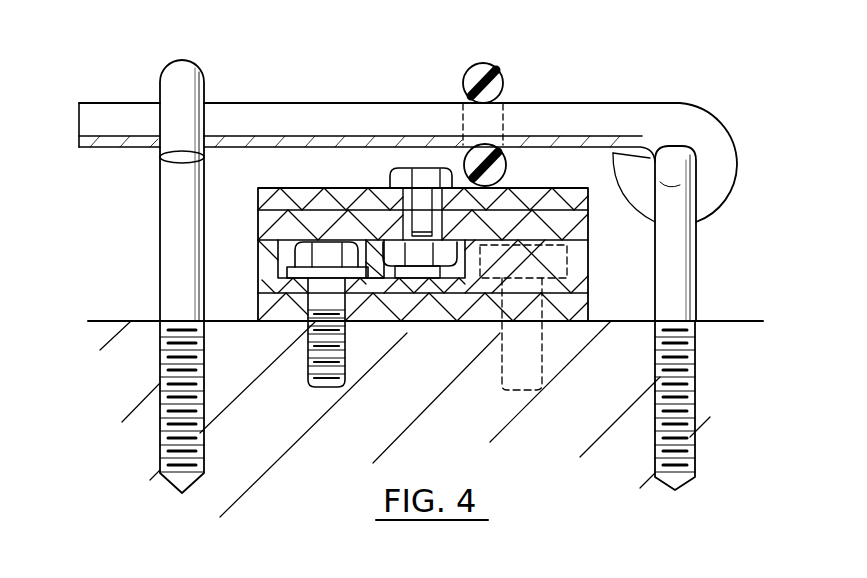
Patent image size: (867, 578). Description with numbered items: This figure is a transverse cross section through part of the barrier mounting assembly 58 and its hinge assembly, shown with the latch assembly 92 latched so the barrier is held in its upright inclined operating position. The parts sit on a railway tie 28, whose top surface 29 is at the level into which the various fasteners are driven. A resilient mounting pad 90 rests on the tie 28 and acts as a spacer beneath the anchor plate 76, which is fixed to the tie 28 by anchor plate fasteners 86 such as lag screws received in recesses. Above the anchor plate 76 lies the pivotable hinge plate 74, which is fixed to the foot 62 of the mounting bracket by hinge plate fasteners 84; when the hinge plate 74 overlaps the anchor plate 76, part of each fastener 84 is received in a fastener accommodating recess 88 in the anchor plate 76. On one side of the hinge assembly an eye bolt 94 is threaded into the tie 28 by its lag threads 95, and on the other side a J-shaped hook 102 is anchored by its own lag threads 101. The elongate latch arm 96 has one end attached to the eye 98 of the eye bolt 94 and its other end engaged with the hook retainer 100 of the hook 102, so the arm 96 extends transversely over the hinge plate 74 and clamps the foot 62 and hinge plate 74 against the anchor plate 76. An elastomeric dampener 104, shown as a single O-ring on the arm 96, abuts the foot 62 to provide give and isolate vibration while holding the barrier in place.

The tie 28 is at (95, 319).
The top surface of tie 29 is at (115, 320).
The mounting assembly 58 is at (594, 164).
The foot 62 is at (533, 200).
The hinge plate 74 is at (586, 226).
The anchor plate 76 is at (585, 272).
The hinge plate fastener 84 is at (437, 268).
The anchor plate fastener 86 is at (322, 257).
The fastener accommodating recess 88 is at (497, 240).
The mounting pad 90 is at (583, 310).
The latch assembly 92 is at (130, 92).
The eye bolt 94 is at (697, 197).
The lag threads 95 is at (690, 362).
The latch arm 96 is at (440, 60).
The eye 98 is at (683, 158).
The hook retainer 100 is at (183, 110).
The lag threads 101 is at (170, 368).
The J-shaped hook 102 is at (723, 140).
The dampener 104 is at (483, 63).